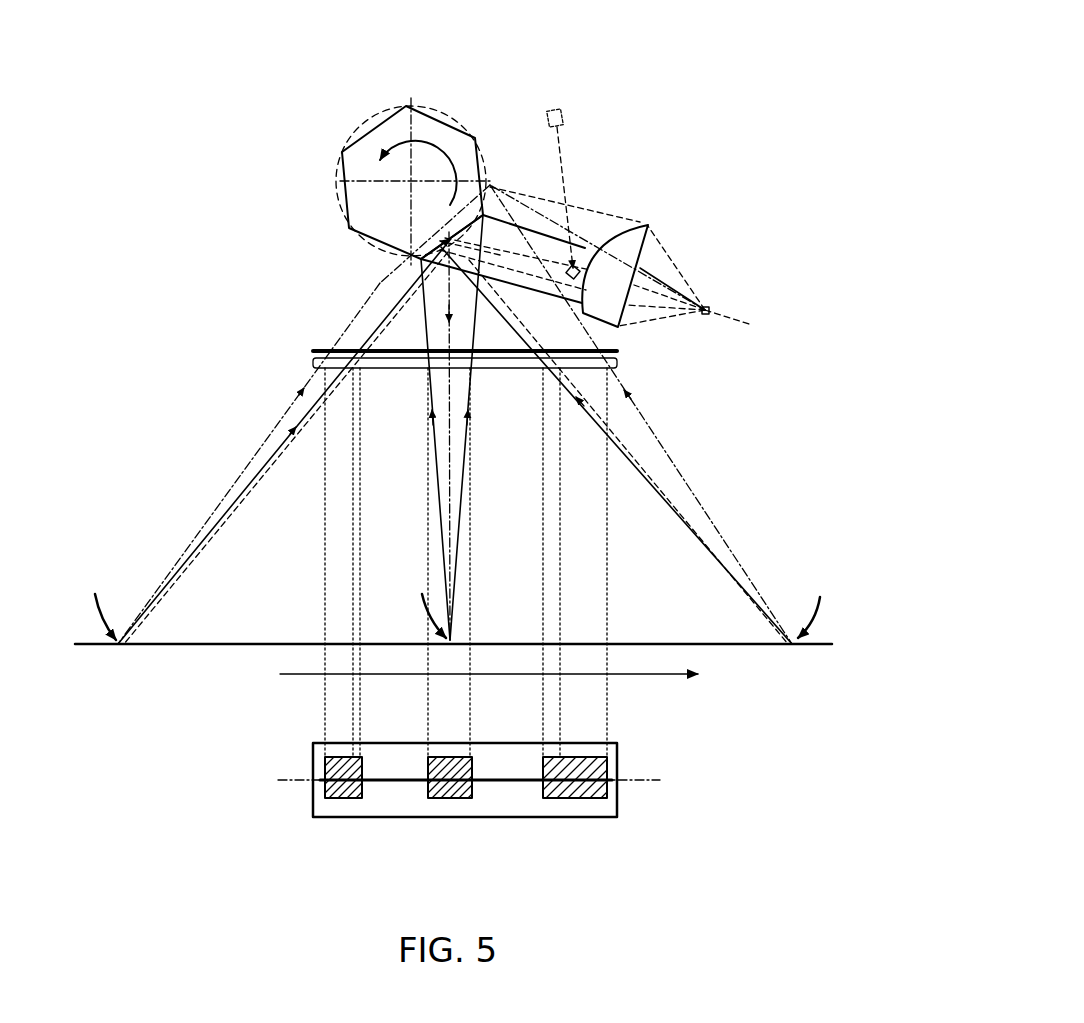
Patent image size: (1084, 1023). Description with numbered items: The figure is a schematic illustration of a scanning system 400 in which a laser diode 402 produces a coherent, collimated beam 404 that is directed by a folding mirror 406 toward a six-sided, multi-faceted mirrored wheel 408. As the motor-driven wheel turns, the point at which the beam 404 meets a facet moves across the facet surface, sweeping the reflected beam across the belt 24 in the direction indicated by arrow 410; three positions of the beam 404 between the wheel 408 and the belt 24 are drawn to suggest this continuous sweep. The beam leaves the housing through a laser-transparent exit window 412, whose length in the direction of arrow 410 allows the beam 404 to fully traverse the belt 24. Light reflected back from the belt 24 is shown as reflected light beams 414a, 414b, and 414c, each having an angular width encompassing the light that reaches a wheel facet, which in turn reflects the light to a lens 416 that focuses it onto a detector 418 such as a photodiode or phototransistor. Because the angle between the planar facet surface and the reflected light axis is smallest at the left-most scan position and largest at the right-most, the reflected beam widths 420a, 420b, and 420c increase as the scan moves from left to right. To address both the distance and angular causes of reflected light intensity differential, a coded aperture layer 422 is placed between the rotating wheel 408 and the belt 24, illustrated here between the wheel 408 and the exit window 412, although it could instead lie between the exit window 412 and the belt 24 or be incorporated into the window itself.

The scanning system 400 is at (522, 66).
The laser diode 402 is at (562, 119).
The beam 404 is at (566, 162).
The folding mirror 406 is at (578, 276).
The mirrored wheel 408 is at (342, 162).
The arrow 410 is at (305, 678).
The exit window 412 is at (316, 362).
The reflected light beam 414a is at (626, 215).
The reflected light beam 414b is at (553, 233).
The reflected light beam 414c is at (515, 190).
The lens 416 is at (640, 233).
The detector 418 is at (706, 315).
The reflected beam width 420a is at (346, 800).
The reflected beam width 420b is at (450, 800).
The reflected beam width 420c is at (574, 800).
The coded aperture layer 422 is at (322, 349).
The belt 24 is at (676, 643).